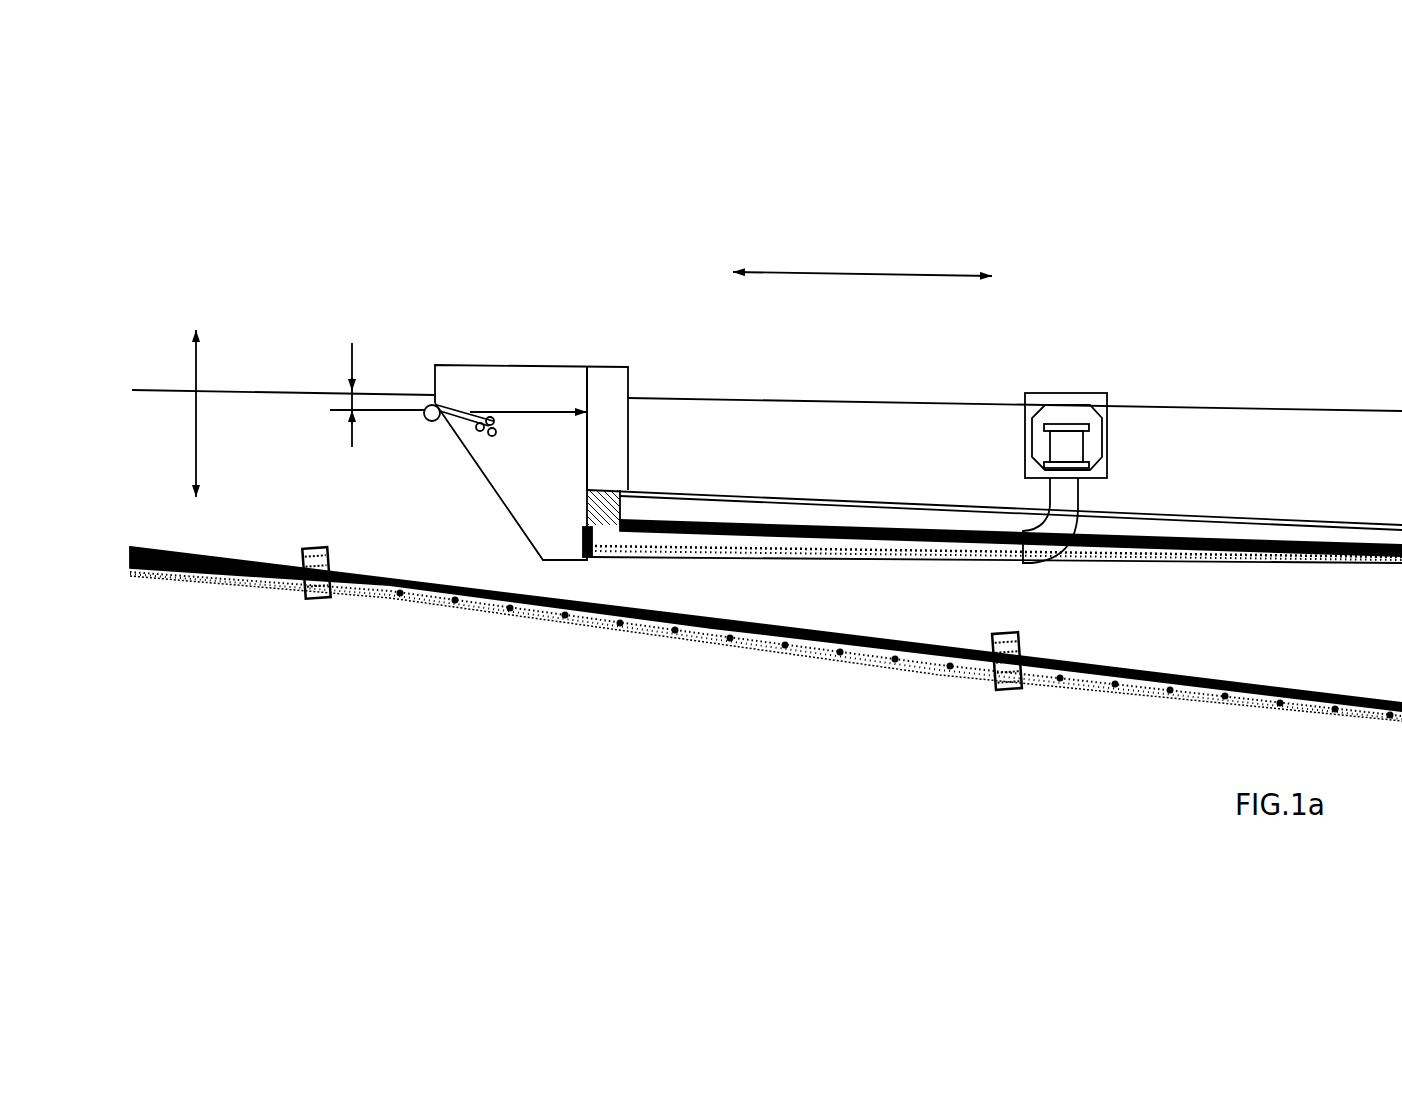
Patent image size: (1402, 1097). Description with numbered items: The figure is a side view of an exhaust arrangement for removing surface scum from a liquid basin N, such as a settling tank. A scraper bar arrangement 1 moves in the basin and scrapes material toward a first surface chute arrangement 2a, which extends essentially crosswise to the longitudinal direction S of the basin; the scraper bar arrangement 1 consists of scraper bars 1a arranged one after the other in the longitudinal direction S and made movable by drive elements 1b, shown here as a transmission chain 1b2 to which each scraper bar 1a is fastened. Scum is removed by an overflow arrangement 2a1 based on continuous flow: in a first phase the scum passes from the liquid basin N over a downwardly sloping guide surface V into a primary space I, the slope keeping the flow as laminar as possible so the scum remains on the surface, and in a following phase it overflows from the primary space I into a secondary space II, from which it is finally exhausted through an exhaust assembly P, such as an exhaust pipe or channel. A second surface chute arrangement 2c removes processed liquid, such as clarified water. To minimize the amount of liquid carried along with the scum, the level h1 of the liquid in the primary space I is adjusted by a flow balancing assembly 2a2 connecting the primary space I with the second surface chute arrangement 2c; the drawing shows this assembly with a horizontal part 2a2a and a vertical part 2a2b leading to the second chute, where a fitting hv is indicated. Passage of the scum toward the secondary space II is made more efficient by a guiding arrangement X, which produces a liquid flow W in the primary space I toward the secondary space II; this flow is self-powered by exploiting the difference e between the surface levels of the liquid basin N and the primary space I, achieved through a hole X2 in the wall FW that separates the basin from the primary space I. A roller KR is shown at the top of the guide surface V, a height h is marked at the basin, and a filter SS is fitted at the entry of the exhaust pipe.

The scraper bar arrangement 1 is at (262, 527).
The scraper bar 1a is at (317, 602).
The drive elements 1b is at (766, 663).
The transmission chain 1b2 is at (712, 645).
The first surface chute arrangement 2a is at (562, 418).
The overflow arrangement 2a1 is at (533, 380).
The flow balancing assembly 2a2 is at (994, 445).
The horizontal pipe section 2a2a is at (994, 445).
The vertical pipe section / elbow 2a2b is at (1088, 440).
The second surface chute arrangement 2c is at (1093, 477).
The height of the rail head h is at (200, 417).
The level of the liquid in the primary space h1 is at (530, 417).
The difference in surface levels e is at (342, 386).
The liquid basin N is at (397, 485).
The primary space I is at (553, 463).
The secondary space II is at (614, 466).
The contact roller KR is at (430, 398).
The guiding arrangement X is at (501, 366).
The hole X2 is at (497, 432).
The liquid flow W is at (511, 425).
The downwardly sloping guide surface V is at (453, 418).
The wall FW is at (517, 500).
The filter SS is at (591, 536).
The longitudinal direction S is at (897, 270).
The exhaust assembly P is at (760, 507).
The valve / connector hv is at (1063, 434).